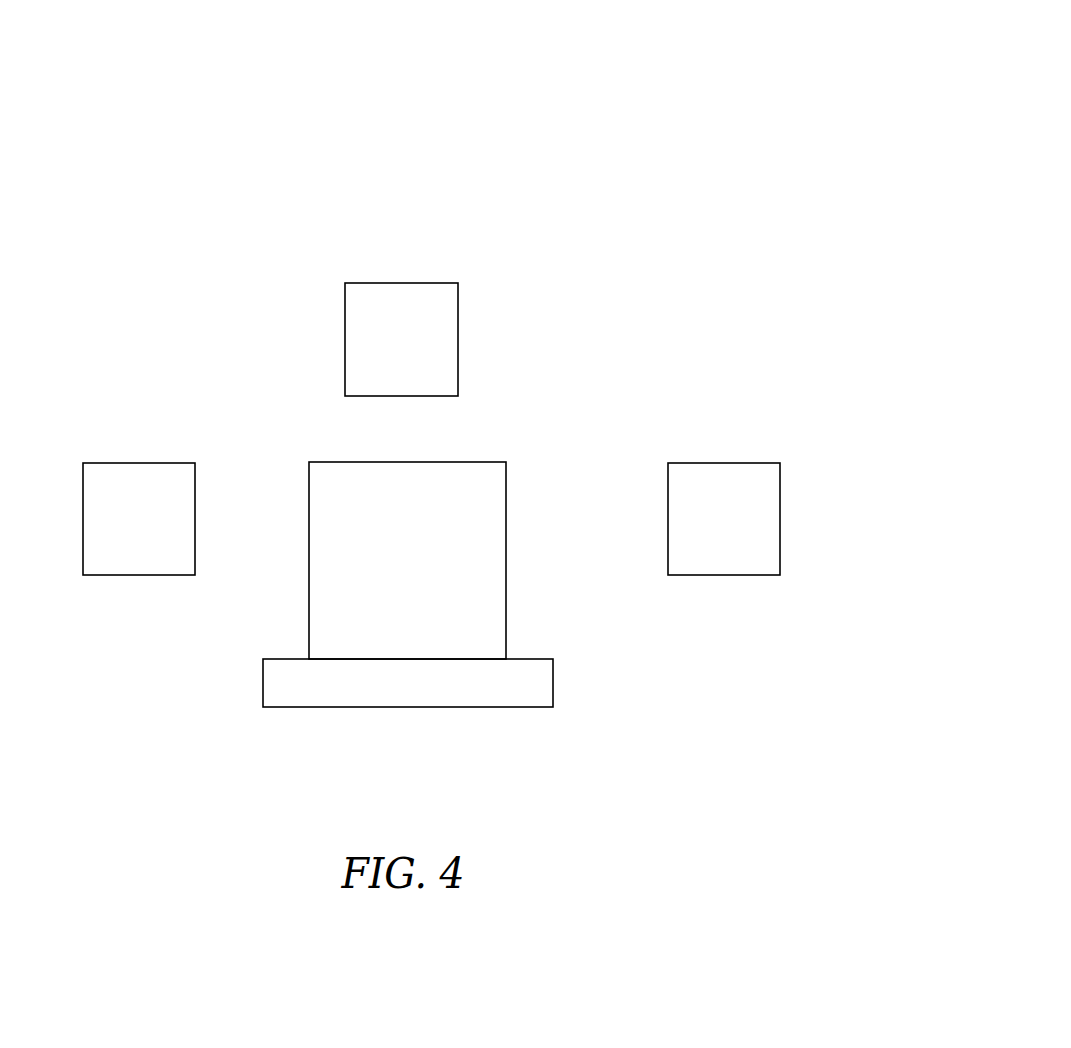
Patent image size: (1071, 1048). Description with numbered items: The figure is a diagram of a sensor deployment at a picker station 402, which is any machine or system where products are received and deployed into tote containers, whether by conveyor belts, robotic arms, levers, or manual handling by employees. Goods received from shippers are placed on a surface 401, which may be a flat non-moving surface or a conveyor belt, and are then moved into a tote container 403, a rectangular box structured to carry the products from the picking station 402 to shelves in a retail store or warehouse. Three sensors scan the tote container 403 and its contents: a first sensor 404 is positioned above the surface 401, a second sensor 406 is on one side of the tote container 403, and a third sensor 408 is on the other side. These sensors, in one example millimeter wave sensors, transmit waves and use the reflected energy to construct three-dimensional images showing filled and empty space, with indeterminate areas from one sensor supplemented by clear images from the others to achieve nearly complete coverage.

The surface 401 is at (553, 683).
The picker station 402 is at (705, 136).
The tote container 403 is at (506, 561).
The first sensor 404 is at (401, 283).
The second sensor 406 is at (139, 463).
The third sensor 408 is at (714, 463).